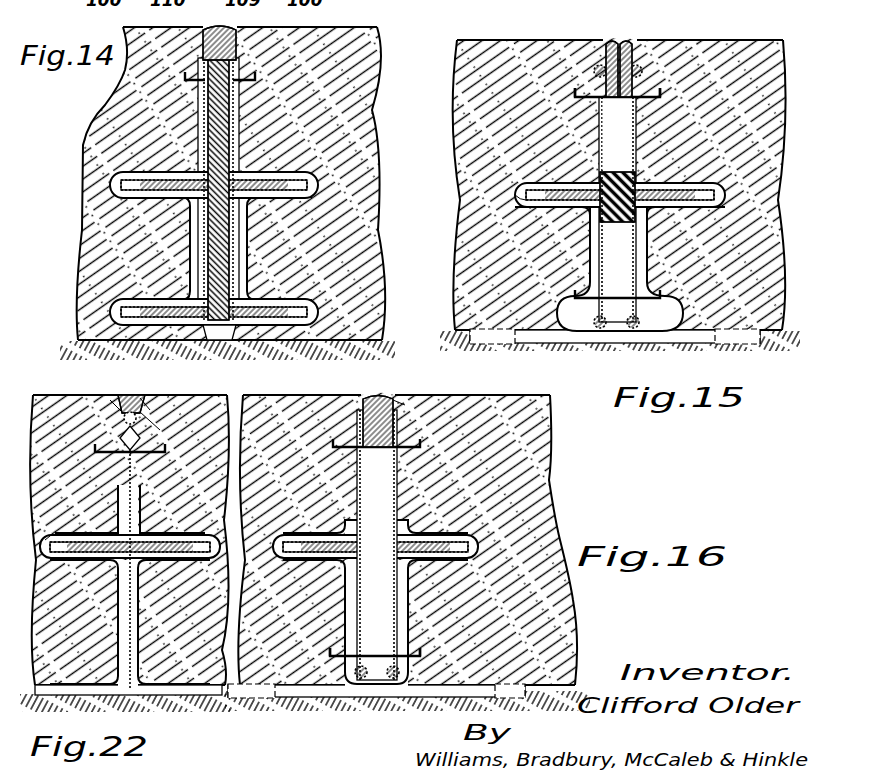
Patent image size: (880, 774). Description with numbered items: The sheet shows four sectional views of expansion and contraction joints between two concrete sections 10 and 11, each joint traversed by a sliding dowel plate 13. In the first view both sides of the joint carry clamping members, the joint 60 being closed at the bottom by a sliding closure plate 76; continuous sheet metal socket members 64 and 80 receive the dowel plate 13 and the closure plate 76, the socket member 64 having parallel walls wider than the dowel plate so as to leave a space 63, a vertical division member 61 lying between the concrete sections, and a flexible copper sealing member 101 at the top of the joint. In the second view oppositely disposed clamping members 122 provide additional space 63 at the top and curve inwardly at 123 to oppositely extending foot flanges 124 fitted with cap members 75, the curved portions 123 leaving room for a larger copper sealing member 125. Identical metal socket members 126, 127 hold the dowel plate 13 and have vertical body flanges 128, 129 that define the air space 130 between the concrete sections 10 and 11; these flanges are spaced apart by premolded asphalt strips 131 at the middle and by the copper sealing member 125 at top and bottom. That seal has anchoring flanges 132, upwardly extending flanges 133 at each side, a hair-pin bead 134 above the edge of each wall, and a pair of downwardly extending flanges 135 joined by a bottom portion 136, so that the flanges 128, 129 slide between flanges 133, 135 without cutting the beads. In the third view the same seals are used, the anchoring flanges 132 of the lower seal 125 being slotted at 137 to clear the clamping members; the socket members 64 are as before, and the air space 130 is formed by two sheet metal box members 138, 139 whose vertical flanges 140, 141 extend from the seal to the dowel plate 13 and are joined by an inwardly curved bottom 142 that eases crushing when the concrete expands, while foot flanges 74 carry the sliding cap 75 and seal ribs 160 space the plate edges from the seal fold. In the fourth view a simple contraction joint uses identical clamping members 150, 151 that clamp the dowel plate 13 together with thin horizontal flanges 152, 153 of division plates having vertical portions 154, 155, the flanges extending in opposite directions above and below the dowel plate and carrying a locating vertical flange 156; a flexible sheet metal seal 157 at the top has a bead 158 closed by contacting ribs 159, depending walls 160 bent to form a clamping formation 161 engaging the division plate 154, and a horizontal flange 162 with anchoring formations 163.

In FIG. 14, the concrete section 10 is at (80, 157).
In FIG. 15, the concrete section 10 is at (510, 53).
In FIG. 22, the concrete section 10 is at (47, 393).
In FIG. 16, the concrete section 10 is at (287, 397).
In FIG. 14, the concrete section 11 is at (375, 53).
In FIG. 15, the concrete section 11 is at (737, 53).
In FIG. 22, the concrete section 11 is at (191, 652).
In FIG. 16, the concrete section 11 is at (528, 528).
In FIG. 14, the dowel plate 13 is at (231, 183).
In FIG. 15, the dowel plate 13 is at (619, 184).
In FIG. 22, the dowel plate 13 is at (129, 540).
In FIG. 16, the dowel plate 13 is at (407, 539).
In FIG. 14, the joint channel 60 is at (237, 110).
In FIG. 14, the web plate 61 is at (227, 250).
In FIG. 15, the space 63 is at (523, 183).
In FIG. 14, the sheet metal socket member 64 is at (135, 180).
In FIG. 16, the sheet metal socket member 64 is at (295, 532).
In FIG. 16, the foot flange 74 is at (443, 680).
In FIG. 15, the cap member 75 is at (740, 323).
In FIG. 16, the cap member 75 is at (553, 683).
In FIG. 14, the sliding closure plate 76 is at (279, 248).
In FIG. 14, the sheet metal socket member 80 is at (132, 308).
In FIG. 14, the flexible copper sealing member 101 is at (242, 62).
In FIG. 15, the clamping member 122 is at (640, 243).
In FIG. 15, the curved portion 123 is at (558, 310).
In FIG. 15, the foot flange 124 is at (683, 313).
In FIG. 15, the copper sealing member 125 is at (645, 52).
In FIG. 16, the copper sealing member 125 is at (410, 403).
In FIG. 15, the metal socket member 126 is at (550, 187).
In FIG. 15, the metal socket member 127 is at (717, 188).
In FIG. 15, the vertical body flange 128 is at (620, 120).
In FIG. 15, the vertical body flange 129 is at (627, 252).
In FIG. 15, the air space 130 is at (667, 97).
In FIG. 16, the air space 130 is at (400, 473).
In FIG. 15, the premolded strip 131 is at (650, 143).
In FIG. 15, the anchoring flange 132 is at (583, 90).
In FIG. 16, the anchoring flange 132 is at (340, 650).
In FIG. 15, the upwardly extending flange 133 is at (597, 66).
In FIG. 15, the hair-pin bead 134 is at (640, 65).
In FIG. 15, the downwardly extending flange 135 is at (620, 43).
In FIG. 15, the bottom portion 136 is at (617, 100).
In FIG. 16, the slot 137 is at (330, 667).
In FIG. 16, the sheet metal box member 138 is at (351, 481).
In FIG. 16, the sheet metal box member 139 is at (397, 610).
In FIG. 16, the vertical flange 140 is at (357, 452).
In FIG. 16, the vertical flange 141 is at (402, 457).
In FIG. 16, the inwardly curved bottom 142 is at (400, 500).
In FIG. 22, the clamping member 150 is at (110, 597).
In FIG. 22, the clamping member 151 is at (137, 593).
In FIG. 22, the horizontal flange 152 is at (100, 513).
In FIG. 22, the horizontal flange 153 is at (140, 547).
In FIG. 22, the division plate 154 is at (140, 463).
In FIG. 22, the division plate 155 is at (140, 620).
In FIG. 22, the vertical flange 156 is at (53, 533).
In FIG. 22, the flexible sheet metal seal 157 is at (153, 407).
In FIG. 22, the bead 158 is at (127, 410).
In FIG. 22, the rib 159 is at (150, 387).
In FIG. 22, the depending wall 160 is at (120, 427).
In FIG. 16, the depending wall 160 is at (387, 417).
In FIG. 22, the clamping formation 161 is at (140, 427).
In FIG. 22, the horizontal flange 162 is at (172, 421).
In FIG. 22, the anchoring formation 163 is at (160, 450).